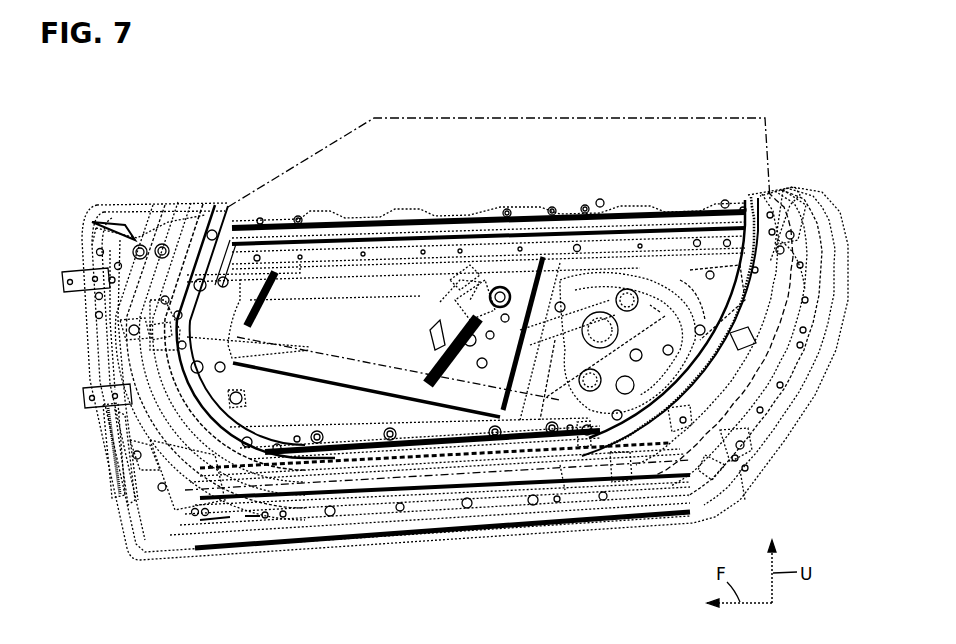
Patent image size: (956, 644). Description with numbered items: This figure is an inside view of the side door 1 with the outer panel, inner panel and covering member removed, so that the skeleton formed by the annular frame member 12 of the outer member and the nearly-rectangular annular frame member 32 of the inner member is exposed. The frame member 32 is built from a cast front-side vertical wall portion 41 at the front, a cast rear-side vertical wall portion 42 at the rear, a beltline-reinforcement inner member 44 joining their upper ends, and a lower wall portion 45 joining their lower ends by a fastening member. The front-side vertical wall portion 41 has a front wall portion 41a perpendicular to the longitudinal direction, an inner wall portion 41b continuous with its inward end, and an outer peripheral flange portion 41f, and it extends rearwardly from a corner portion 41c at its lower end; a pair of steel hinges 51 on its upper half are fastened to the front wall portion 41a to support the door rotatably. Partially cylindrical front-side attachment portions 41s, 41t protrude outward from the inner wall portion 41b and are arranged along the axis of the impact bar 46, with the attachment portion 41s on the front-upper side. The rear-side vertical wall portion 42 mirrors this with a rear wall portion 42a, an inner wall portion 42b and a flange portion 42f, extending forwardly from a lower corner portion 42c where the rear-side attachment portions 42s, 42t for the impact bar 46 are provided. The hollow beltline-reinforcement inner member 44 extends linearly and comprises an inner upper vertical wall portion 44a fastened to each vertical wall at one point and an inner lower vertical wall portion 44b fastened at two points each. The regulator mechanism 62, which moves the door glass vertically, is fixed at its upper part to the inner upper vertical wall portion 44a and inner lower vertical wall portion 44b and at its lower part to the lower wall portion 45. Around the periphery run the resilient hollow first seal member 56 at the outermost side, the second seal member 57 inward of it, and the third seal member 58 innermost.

The side door 1 is at (787, 103).
The frame member 12 is at (363, 548).
The frame member 32 is at (347, 198).
The front-side vertical wall portion 41 is at (182, 364).
The front wall portion 41a is at (90, 382).
The inner wall portion 41b is at (233, 415).
The corner portion 41c is at (173, 470).
The flange portion 41f is at (120, 427).
The front-side attachment portion 41s is at (130, 323).
The front-side attachment portion 41t is at (167, 328).
The rear-side vertical wall portion 42 is at (725, 330).
The rear wall portion 42a is at (787, 250).
The inner wall portion 42b is at (733, 337).
The corner portion 42c is at (717, 463).
The flange portion 42f is at (792, 228).
The rear-side attachment portion 42s is at (683, 420).
The rear-side attachment portion 42t is at (743, 443).
The beltline-reinforcement inner member 44 is at (497, 238).
The inner upper vertical wall portion 44a is at (288, 218).
The inner lower vertical wall portion 44b is at (297, 263).
The lower wall portion 45 is at (377, 443).
The impact bar 46 is at (367, 370).
The hinge 51 is at (72, 268).
The first seal member 56 is at (170, 510).
The second seal member 57 is at (228, 477).
The third seal member 58 is at (270, 463).
The regulator mechanism 62 is at (443, 330).